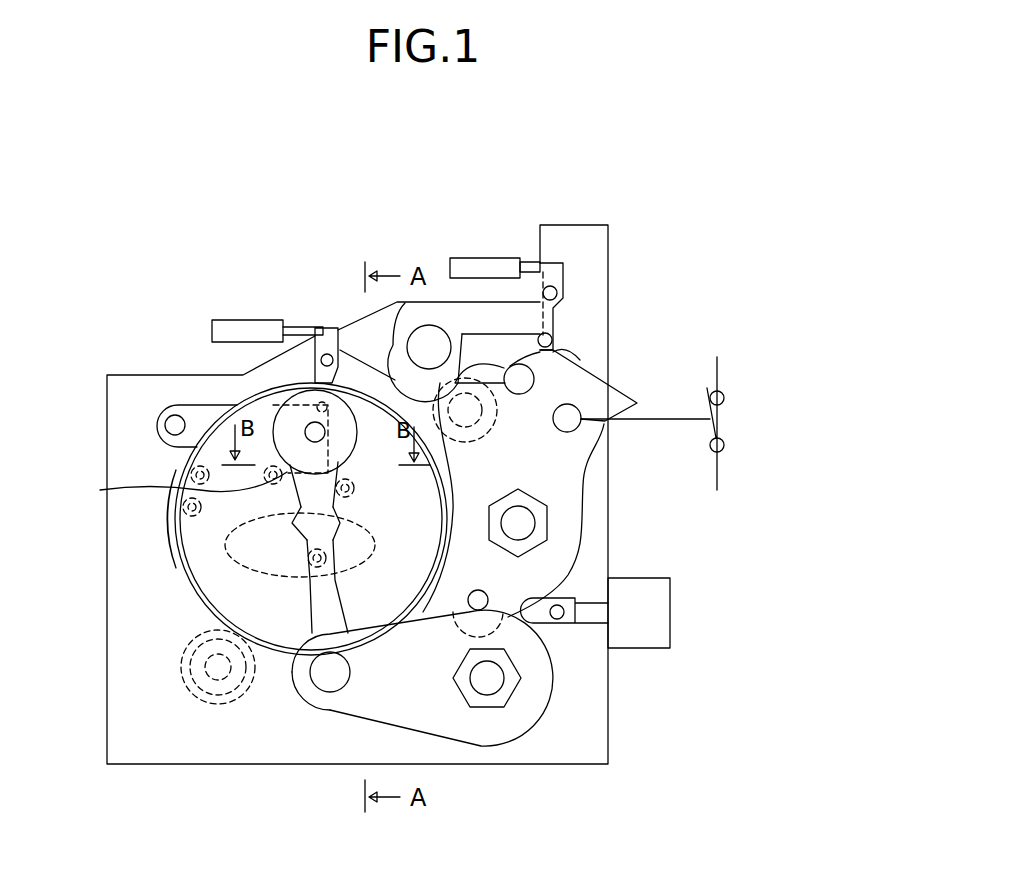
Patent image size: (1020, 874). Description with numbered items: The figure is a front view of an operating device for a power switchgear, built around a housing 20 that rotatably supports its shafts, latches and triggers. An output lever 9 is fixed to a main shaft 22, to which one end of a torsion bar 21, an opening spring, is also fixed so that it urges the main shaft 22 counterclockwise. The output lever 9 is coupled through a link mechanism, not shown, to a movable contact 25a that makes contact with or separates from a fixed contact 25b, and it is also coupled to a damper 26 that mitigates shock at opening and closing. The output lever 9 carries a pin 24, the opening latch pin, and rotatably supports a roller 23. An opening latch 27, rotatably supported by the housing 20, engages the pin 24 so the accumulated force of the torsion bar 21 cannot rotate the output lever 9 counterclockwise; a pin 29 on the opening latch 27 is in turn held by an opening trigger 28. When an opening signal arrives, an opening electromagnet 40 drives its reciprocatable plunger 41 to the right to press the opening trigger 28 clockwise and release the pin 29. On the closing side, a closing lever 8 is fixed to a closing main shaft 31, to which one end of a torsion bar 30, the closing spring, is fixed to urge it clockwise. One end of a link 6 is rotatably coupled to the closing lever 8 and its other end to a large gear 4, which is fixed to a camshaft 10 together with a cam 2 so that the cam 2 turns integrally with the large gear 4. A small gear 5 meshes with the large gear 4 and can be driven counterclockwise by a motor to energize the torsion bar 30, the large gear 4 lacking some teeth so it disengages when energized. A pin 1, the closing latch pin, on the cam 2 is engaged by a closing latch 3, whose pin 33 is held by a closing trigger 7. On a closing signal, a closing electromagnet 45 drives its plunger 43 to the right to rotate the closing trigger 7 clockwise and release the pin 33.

The pin 1 is at (100, 489).
The cam 2 is at (163, 520).
The closing latch 3 is at (170, 376).
The large gear 4 is at (180, 583).
The small gear 5 is at (181, 665).
The link 6 is at (323, 714).
The closing trigger 7 is at (333, 330).
The closing lever 8 is at (530, 735).
The output lever 9 is at (585, 360).
The camshaft 10 is at (298, 530).
The housing 20 is at (585, 225).
The torsion bar 21 is at (537, 522).
The main shaft 22 is at (553, 517).
The roller 23 is at (457, 377).
The pin 24 is at (565, 357).
The movable contact 25a is at (710, 397).
The fixed contact 25b is at (724, 398).
The damper 26 is at (660, 578).
The opening latch 27 is at (458, 330).
The opening trigger 28 is at (553, 268).
The pin 29 is at (552, 339).
The torsion bar 30 is at (490, 705).
The closing main shaft 31 is at (481, 705).
The pin 33 is at (273, 402).
The opening electromagnet 40 is at (485, 267).
The plunger 41 is at (523, 262).
The plunger 43 is at (318, 324).
The closing electromagnet 45 is at (235, 330).